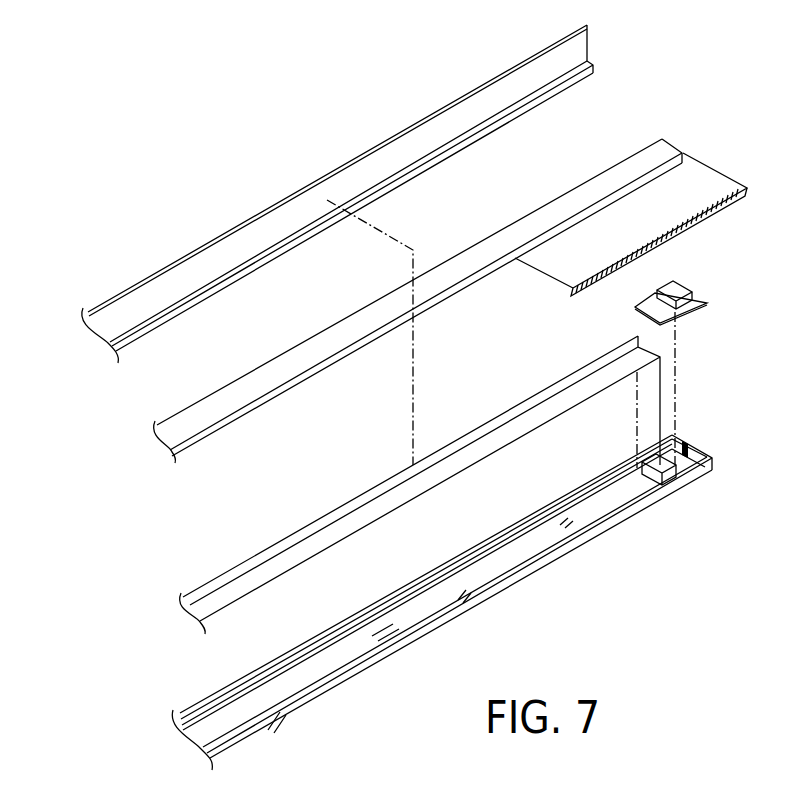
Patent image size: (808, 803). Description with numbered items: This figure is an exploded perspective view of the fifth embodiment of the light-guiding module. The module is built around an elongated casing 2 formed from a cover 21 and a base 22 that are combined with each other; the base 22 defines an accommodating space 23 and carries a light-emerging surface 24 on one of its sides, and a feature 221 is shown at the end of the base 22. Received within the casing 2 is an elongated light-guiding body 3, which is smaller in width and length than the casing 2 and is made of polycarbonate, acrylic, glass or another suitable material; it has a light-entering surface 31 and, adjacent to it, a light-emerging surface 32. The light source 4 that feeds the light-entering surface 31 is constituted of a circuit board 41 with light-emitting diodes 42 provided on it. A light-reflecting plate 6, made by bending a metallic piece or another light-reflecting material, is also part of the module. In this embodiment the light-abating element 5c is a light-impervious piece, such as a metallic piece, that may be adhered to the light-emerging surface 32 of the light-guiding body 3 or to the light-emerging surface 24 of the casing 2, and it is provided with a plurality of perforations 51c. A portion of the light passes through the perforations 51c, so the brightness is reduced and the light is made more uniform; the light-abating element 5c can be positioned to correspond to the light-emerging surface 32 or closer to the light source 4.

The casing 2 is at (337, 194).
The cover 21 is at (125, 312).
The light-guiding body 3 is at (453, 281).
The light-entering surface 31 is at (683, 153).
The light-emerging surface 32 is at (247, 405).
The light-abating element 5c is at (653, 224).
The perforations 51c is at (689, 232).
The light source 4 is at (707, 323).
The circuit board 41 is at (675, 313).
The light-emitting diodes 42 is at (677, 287).
The light-reflecting plate 6 is at (487, 413).
The base 22 is at (708, 452).
The socket in tray 221 is at (625, 505).
The accommodating space 23 is at (318, 683).
The light-emerging surface 24 is at (490, 598).